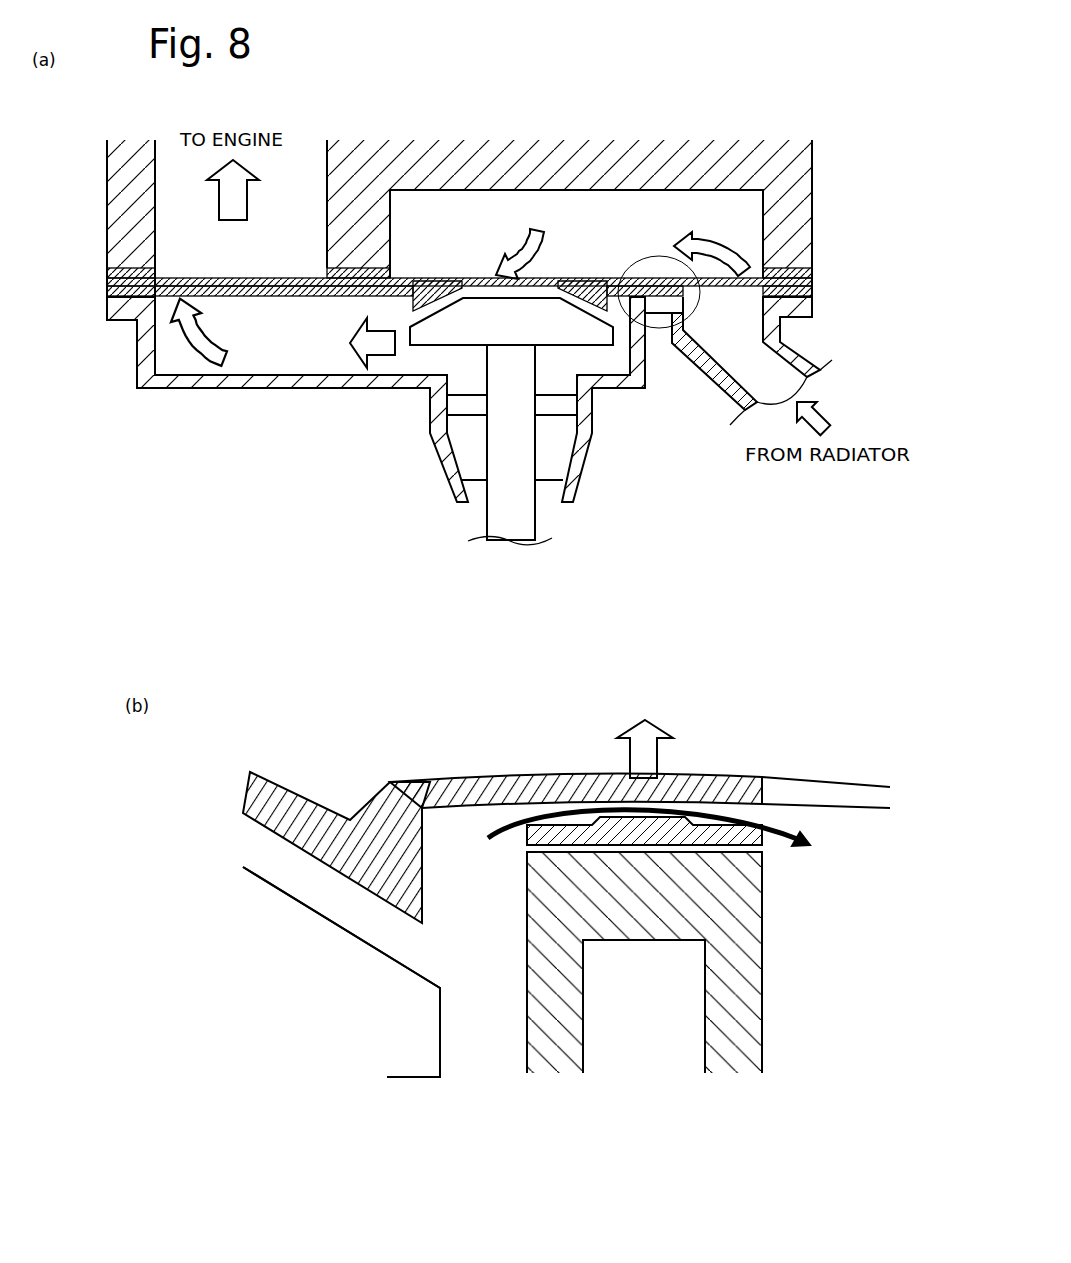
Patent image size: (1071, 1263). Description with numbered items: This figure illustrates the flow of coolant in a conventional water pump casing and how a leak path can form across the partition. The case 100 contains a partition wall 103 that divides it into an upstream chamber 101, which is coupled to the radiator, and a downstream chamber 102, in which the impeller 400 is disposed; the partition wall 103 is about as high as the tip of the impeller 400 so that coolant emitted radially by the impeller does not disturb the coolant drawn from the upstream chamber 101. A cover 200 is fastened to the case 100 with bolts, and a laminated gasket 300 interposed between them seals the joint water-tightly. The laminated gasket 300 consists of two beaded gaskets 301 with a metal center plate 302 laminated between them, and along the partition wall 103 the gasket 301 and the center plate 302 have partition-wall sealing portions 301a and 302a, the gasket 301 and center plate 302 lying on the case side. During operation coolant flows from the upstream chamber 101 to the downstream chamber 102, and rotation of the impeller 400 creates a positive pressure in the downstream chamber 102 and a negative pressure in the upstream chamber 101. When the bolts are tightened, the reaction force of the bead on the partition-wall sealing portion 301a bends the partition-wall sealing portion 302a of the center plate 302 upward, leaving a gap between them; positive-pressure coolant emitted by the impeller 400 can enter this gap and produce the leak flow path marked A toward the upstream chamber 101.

The case 100 is at (168, 388).
The upstream chamber 101 is at (737, 365).
The downstream chamber 102 is at (312, 369).
The partition wall 103 is at (685, 323).
The cover 200 is at (800, 180).
The laminated gasket 300 is at (529, 584).
The gasket 301 is at (812, 272).
The partition-wall sealing portion 301a is at (765, 840).
The center plate 302 is at (812, 283).
The partition-wall sealing portion 302a is at (648, 278).
The impeller 400 is at (462, 318).